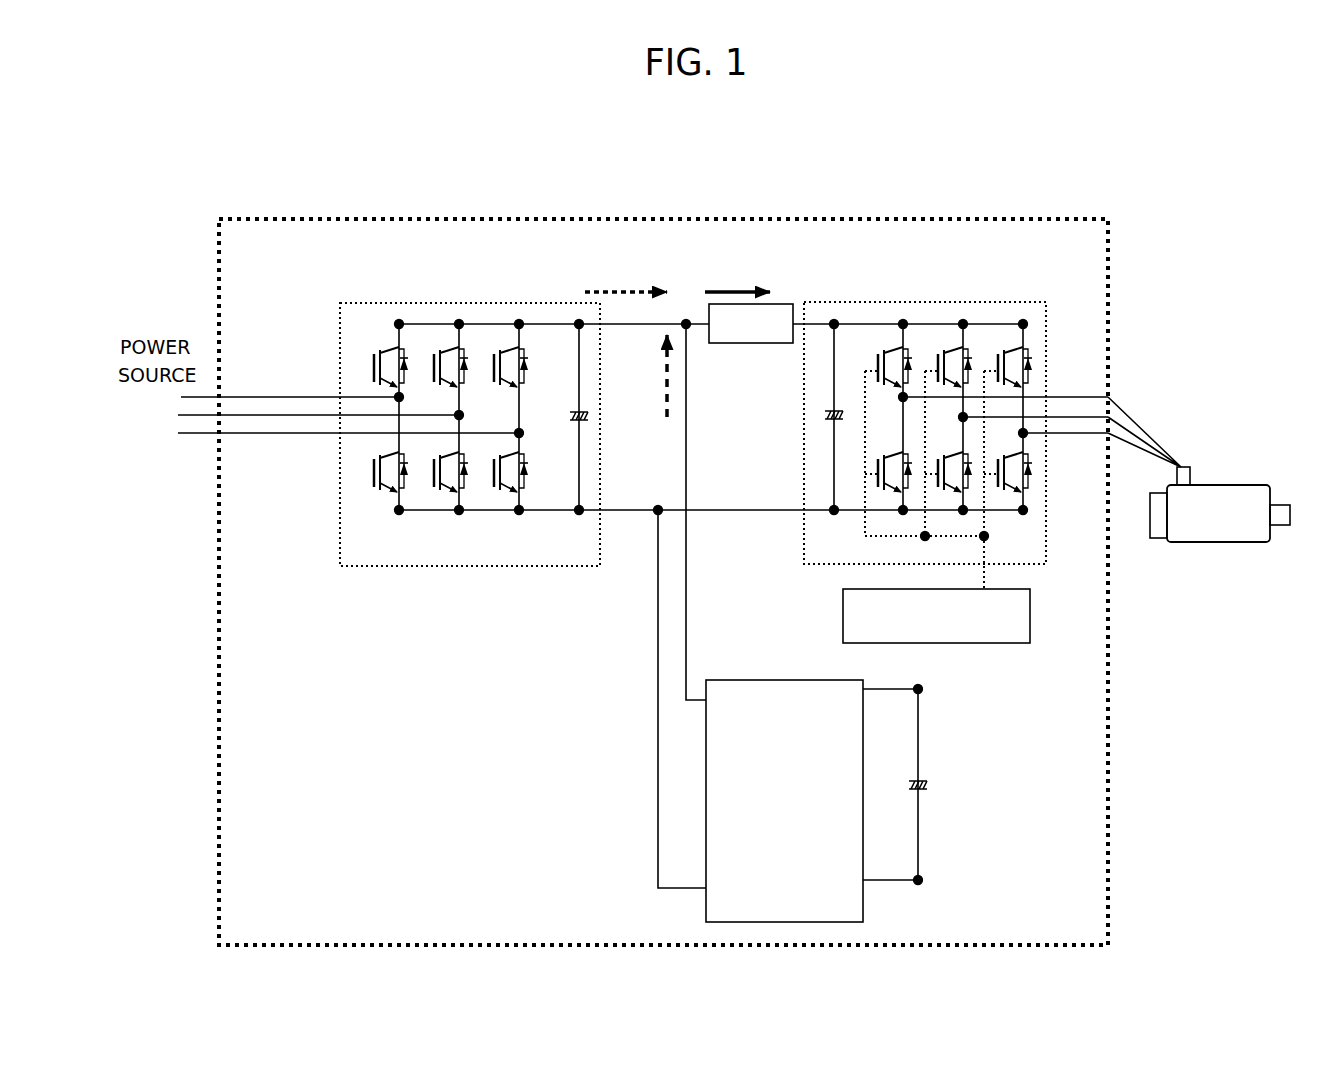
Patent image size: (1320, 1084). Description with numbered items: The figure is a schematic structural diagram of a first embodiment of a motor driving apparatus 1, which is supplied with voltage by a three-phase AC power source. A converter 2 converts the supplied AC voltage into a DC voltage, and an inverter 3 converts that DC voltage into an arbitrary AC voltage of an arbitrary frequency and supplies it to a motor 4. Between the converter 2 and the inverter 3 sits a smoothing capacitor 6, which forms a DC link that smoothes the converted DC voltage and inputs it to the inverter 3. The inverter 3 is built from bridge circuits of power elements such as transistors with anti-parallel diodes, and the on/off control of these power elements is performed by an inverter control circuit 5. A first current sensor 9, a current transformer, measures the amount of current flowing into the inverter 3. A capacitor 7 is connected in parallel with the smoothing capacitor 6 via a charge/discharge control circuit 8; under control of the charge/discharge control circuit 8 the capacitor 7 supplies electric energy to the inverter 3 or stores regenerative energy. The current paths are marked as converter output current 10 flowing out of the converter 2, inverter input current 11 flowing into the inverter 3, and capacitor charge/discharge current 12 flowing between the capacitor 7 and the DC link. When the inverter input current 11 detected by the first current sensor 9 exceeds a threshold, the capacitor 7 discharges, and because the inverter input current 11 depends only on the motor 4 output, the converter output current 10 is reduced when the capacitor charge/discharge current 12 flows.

The motor driving apparatus 1 is at (366, 216).
The converter 2 is at (435, 300).
The inverter 3 is at (902, 300).
The motor 4 is at (1203, 478).
The inverter control circuit 5 is at (910, 647).
The smoothing capacitor 6 is at (569, 432).
The capacitor 7 is at (908, 803).
The charge/discharge control circuit 8 is at (695, 785).
The first current sensor 9 is at (742, 350).
The converter output current 10 is at (619, 290).
The inverter input current 11 is at (735, 288).
The capacitor charge/discharge current 12 is at (663, 372).